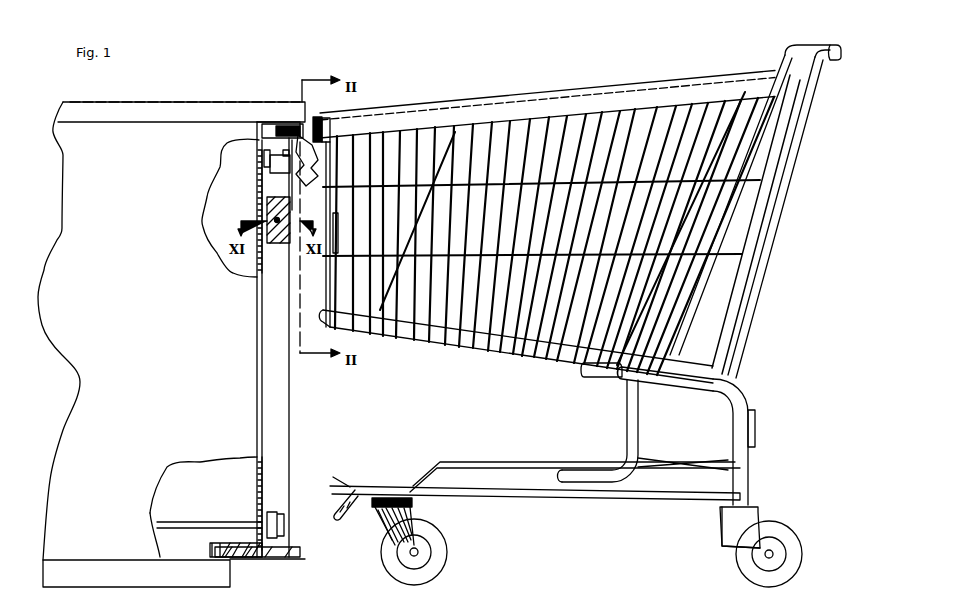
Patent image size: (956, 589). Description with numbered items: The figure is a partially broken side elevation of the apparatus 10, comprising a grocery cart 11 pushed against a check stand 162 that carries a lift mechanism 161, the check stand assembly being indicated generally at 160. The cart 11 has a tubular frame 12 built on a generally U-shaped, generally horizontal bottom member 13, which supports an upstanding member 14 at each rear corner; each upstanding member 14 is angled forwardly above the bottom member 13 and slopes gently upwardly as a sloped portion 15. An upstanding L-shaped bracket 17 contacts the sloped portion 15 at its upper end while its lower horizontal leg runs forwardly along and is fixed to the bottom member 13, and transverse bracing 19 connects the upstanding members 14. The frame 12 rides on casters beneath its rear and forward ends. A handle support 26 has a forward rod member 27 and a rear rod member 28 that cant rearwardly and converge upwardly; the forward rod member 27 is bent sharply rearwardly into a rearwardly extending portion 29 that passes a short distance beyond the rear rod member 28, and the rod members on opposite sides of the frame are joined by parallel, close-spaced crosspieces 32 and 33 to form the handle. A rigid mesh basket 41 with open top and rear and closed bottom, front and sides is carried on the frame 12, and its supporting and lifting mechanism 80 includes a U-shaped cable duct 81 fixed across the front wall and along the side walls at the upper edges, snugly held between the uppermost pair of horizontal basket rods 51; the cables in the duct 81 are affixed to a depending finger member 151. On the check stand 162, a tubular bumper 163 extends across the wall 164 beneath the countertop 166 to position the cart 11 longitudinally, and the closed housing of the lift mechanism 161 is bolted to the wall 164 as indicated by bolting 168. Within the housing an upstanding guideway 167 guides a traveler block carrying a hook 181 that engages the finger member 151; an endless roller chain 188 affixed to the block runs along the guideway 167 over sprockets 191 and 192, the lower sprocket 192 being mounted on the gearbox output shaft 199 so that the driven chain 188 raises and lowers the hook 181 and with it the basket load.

The apparatus 10 is at (343, 72).
The grocery cart 11 is at (760, 336).
The tubular frame 12 is at (756, 462).
The bottom member 13 is at (537, 497).
The upstanding member 14 is at (744, 396).
The sloped portion 15 is at (658, 384).
The L-shaped bracket 17 is at (626, 418).
The transverse bracing 19 is at (753, 427).
The handle support 26 is at (778, 50).
The forward rod member 27 is at (781, 61).
The rear rod member 28 is at (793, 133).
The rearwardly extending portion 29 is at (800, 49).
The crosspiece 32 is at (546, 588).
The crosspiece 33 is at (532, 588).
The basket 41 is at (508, 362).
The horizontal basket rods 51 is at (597, 93).
The supporting and lifting mechanism 80 is at (527, 93).
The cable duct 81 is at (569, 103).
The finger member 151 is at (309, 174).
The counter coupling device 160 is at (318, 412).
The lift mechanism 161 is at (293, 437).
The check stand 162 is at (95, 387).
The tubular bumper 163 is at (278, 130).
The wall 164 is at (259, 308).
The countertop 166 is at (212, 117).
The guideway 167 is at (268, 333).
The bolting 168 is at (268, 557).
The hook 181 is at (263, 184).
The endless roller chain 188 is at (262, 208).
The sprocket 191 is at (258, 160).
The sprocket 192 is at (262, 514).
The output shaft 199 is at (210, 524).